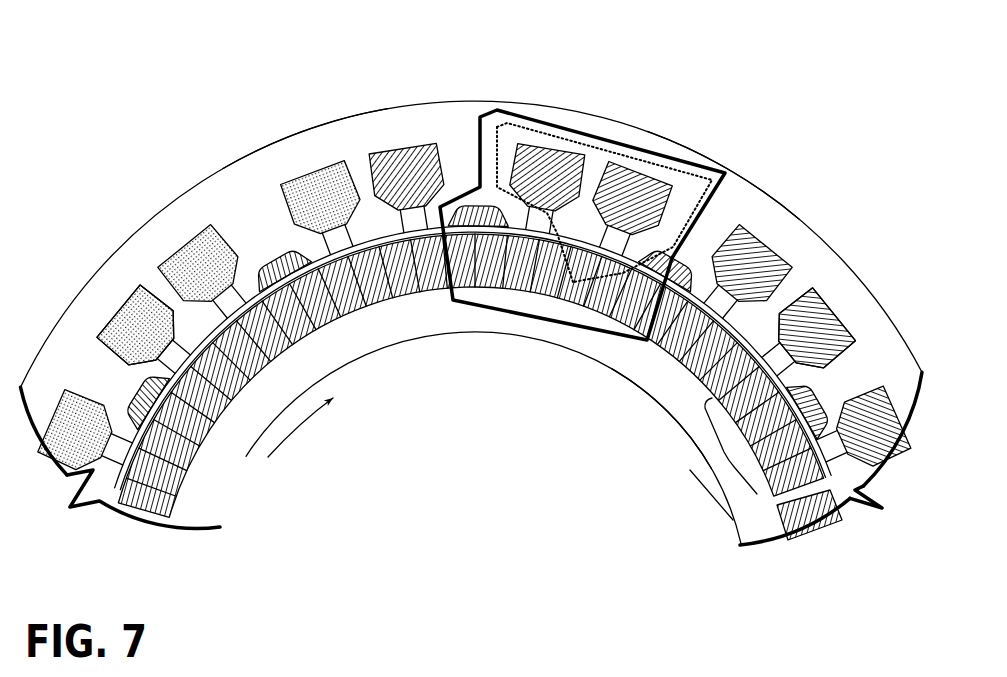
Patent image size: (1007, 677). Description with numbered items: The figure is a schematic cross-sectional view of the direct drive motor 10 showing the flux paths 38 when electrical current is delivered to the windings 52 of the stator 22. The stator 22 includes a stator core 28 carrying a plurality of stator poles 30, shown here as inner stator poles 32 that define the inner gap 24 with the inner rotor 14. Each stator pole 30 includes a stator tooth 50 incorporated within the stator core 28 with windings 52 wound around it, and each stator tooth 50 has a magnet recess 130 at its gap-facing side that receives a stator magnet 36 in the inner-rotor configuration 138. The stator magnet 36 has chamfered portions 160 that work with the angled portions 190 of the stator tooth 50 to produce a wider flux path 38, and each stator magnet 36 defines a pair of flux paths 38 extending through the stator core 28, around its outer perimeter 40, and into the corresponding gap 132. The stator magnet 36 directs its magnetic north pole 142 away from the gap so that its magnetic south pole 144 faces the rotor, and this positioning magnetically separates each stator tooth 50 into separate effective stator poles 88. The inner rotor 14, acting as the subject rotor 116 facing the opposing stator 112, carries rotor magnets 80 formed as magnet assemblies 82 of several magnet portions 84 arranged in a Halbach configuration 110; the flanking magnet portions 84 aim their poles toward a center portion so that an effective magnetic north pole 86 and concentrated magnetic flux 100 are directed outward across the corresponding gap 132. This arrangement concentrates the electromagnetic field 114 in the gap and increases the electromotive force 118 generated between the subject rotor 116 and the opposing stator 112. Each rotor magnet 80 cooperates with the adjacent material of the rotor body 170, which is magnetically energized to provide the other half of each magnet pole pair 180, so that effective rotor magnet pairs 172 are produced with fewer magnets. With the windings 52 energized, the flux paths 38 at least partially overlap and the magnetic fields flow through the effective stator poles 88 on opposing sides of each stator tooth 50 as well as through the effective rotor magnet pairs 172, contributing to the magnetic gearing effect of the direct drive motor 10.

The direct drive motor 10 is at (745, 100).
The inner rotor 14 is at (717, 505).
The stator 22 is at (77, 287).
The inner gap 24 is at (107, 507).
The stator core 28 is at (747, 202).
The stator pole 30 is at (866, 358).
The inner stator pole 32 is at (866, 425).
The stator magnet 36 is at (860, 475).
The flux path 38 is at (530, 216).
The outer perimeter 40 is at (75, 462).
The stator tooth 50 is at (52, 345).
The windings 52 is at (122, 300).
The rotor magnet 80 is at (217, 443).
The magnet assembly 82 is at (240, 407).
The magnet portion 84 is at (312, 318).
The effective magnetic north pole 86 is at (500, 232).
The effective stator pole 88 is at (240, 300).
The magnetic flux 100 is at (493, 110).
The Halbach configuration 110 is at (673, 392).
The opposing stator 112 is at (747, 173).
The electromagnetic field 114 is at (637, 133).
The subject rotor 116 is at (767, 557).
The electromotive force 118 is at (325, 425).
The magnet recess 130 is at (270, 253).
The corresponding gap 132 is at (750, 327).
The inner-rotor configuration 138 is at (325, 113).
The magnetic north pole 142 is at (568, 310).
The magnetic south pole 144 is at (553, 298).
The chamfered portion 160 is at (133, 320).
The rotor body 170 is at (410, 313).
The rotor magnet pair 172 is at (703, 463).
The magnet pole pair 180 is at (688, 147).
The angled portion 190 is at (898, 458).